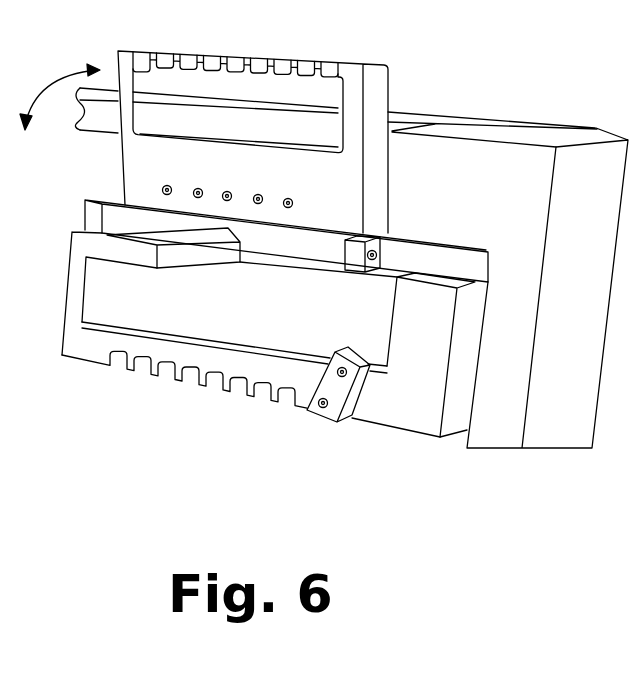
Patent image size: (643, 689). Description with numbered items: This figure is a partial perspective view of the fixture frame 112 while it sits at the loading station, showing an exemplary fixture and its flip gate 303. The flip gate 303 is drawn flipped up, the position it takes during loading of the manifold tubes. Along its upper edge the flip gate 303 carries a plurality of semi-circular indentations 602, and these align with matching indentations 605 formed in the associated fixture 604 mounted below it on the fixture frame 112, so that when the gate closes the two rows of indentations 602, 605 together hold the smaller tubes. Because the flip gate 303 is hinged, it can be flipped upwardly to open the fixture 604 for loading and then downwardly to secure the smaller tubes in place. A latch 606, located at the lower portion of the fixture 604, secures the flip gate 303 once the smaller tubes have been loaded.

The fixture frame 112 is at (460, 172).
The flip gate 303 is at (375, 88).
The semi-circular indentations 602 is at (164, 55).
The fixture 604 is at (93, 348).
The indentations 605 is at (163, 375).
The latch 606 is at (337, 422).